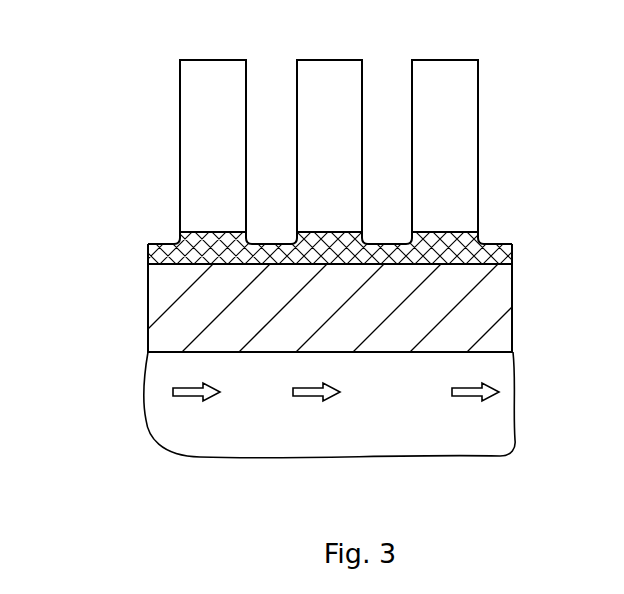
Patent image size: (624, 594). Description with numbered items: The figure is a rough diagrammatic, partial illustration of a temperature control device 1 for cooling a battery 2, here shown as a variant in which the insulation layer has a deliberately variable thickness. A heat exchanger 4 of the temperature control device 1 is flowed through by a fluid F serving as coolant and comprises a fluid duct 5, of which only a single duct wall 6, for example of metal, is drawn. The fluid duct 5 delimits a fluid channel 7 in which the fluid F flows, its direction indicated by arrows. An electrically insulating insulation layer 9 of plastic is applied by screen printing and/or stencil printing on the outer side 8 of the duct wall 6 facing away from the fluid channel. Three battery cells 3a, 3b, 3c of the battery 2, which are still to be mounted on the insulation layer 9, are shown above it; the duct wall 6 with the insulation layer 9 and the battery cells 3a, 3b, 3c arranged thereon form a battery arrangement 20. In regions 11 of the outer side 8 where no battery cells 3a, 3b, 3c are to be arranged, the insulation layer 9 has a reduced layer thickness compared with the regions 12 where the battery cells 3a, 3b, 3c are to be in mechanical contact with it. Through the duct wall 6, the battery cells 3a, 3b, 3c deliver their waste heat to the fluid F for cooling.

The temperature control device 1 is at (328, 264).
The battery 2 is at (280, 146).
The battery cell 3a is at (225, 128).
The battery cell 3b is at (342, 128).
The battery cell 3c is at (457, 128).
The heat exchanger 4 is at (304, 263).
The fluid duct 5 is at (151, 247).
The duct wall 6 is at (512, 316).
The fluid channel 7 is at (329, 405).
The outer side 8 is at (498, 243).
The insulation layer 9 is at (335, 222).
The regions 11 is at (268, 250).
The regions 12 is at (212, 245).
The battery arrangement 20 is at (330, 127).
The fluid F is at (312, 401).